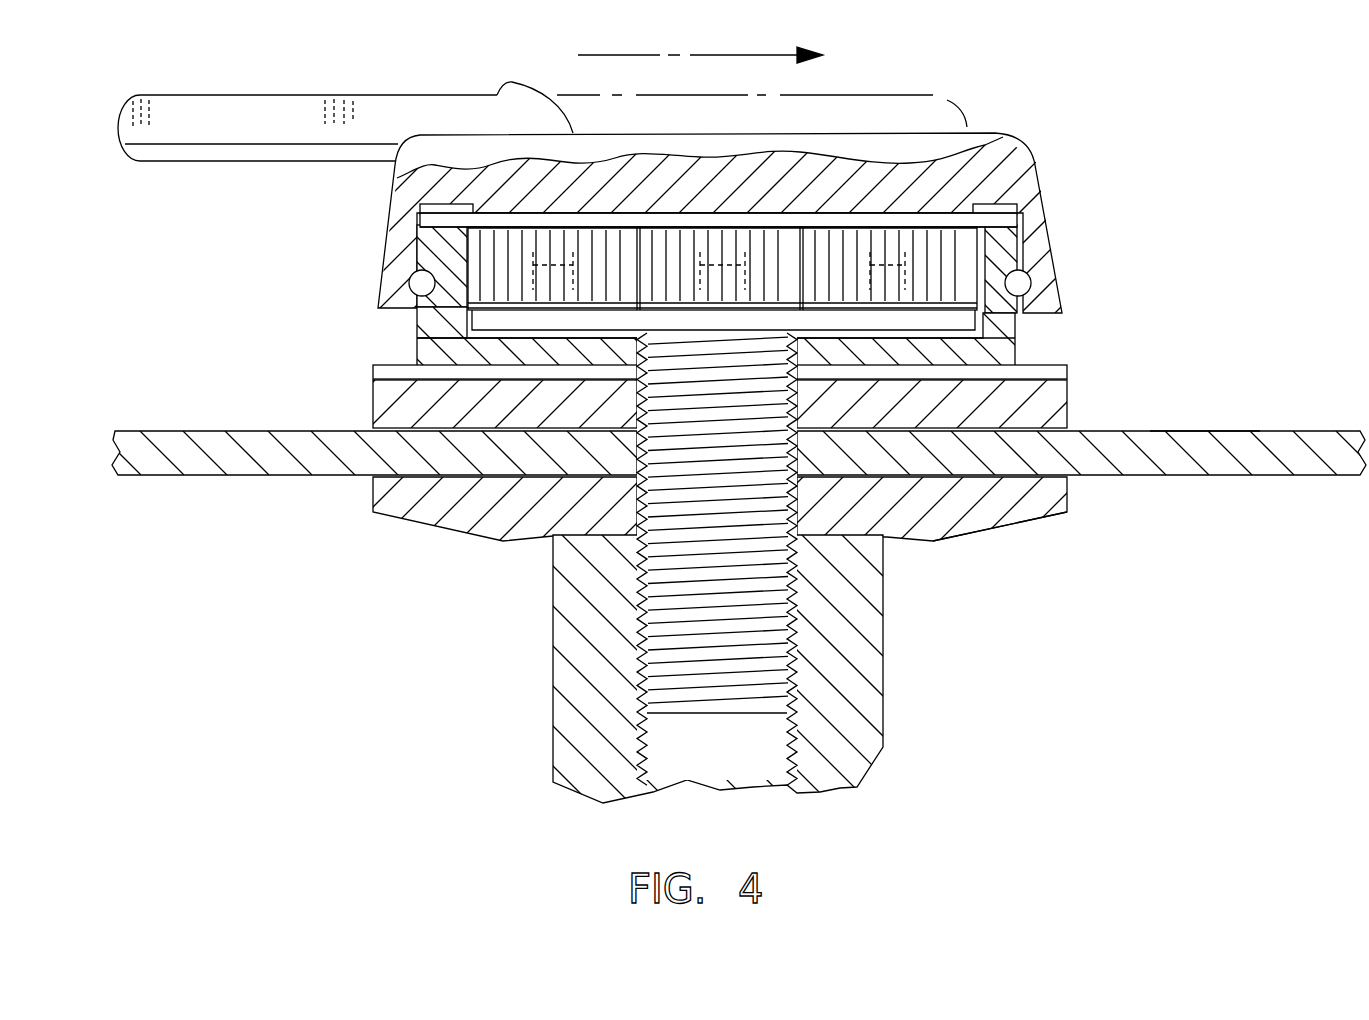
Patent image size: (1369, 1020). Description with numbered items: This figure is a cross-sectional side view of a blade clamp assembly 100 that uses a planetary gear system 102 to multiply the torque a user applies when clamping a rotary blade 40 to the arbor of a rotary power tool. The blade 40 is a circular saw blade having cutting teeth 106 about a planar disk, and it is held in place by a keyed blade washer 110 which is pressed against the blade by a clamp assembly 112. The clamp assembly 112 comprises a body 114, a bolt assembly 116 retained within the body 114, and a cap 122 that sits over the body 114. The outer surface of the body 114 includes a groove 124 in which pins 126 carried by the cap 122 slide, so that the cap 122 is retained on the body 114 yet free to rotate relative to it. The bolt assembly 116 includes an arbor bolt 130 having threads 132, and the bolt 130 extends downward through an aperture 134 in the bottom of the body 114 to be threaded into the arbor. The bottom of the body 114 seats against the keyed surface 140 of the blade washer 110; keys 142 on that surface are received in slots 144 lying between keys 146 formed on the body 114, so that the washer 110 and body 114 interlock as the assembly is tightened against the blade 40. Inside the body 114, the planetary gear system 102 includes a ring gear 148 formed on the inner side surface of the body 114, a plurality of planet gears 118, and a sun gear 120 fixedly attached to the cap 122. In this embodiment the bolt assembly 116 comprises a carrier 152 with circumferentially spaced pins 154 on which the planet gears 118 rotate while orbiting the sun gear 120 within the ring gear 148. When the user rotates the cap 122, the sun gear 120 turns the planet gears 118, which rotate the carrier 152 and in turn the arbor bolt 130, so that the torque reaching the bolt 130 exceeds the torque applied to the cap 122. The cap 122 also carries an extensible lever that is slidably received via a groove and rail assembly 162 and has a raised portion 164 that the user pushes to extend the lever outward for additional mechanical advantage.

The rotary blade 40 is at (1287, 467).
The blade clamp assembly 100 is at (1088, 147).
The planetary gear system 102 is at (885, 264).
The cutting teeth 106 is at (1200, 464).
The keyed blade washer 110 is at (1062, 400).
The clamp assembly 112 is at (1057, 248).
The body 114 is at (1013, 335).
The bolt assembly 116 is at (423, 340).
The planet gears 118 is at (571, 228).
The sun gear 120 is at (741, 222).
The cap 122 is at (1043, 207).
The groove 124 is at (1012, 268).
The pins 126 is at (408, 281).
The arbor bolt 130 is at (773, 620).
The threads 132 is at (773, 563).
The aperture 134 is at (950, 322).
The keyed surface 140 is at (1053, 370).
The keys 142 is at (377, 372).
The slots 144 is at (427, 382).
The keys 146 is at (470, 340).
The ring gear 148 is at (420, 240).
The carrier 152 is at (1012, 372).
The pins 154 is at (1002, 131).
The groove and rail assembly 162 is at (205, 163).
The raised portion 164 is at (506, 84).